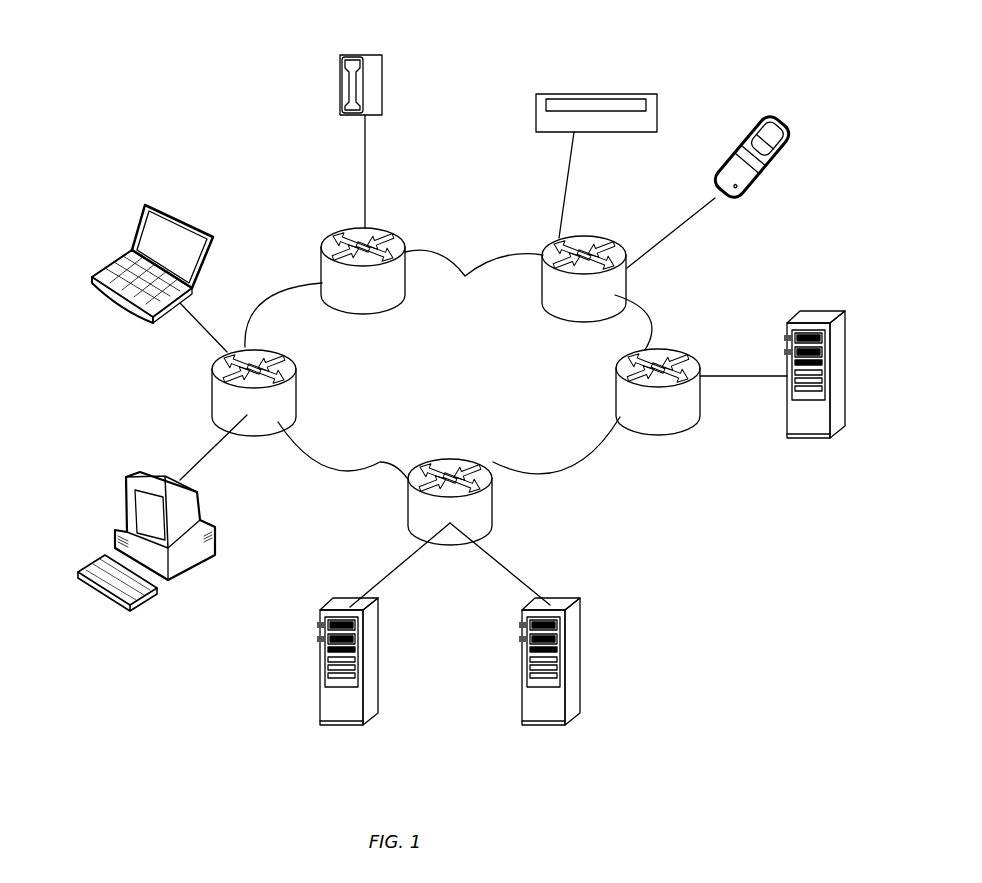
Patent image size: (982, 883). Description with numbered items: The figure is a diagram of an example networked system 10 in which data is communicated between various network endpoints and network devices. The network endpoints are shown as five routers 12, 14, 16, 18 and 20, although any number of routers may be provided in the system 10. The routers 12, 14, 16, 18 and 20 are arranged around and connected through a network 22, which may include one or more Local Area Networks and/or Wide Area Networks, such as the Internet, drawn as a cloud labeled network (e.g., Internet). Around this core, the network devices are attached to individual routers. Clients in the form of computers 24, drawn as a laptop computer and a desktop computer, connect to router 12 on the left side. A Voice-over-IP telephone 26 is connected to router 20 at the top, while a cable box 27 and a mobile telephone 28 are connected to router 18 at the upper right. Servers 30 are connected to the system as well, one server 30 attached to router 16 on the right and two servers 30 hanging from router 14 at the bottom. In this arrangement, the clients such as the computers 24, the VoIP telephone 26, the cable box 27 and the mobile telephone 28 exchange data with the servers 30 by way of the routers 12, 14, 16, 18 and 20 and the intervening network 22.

The system 10 is at (145, 52).
The router 12 is at (221, 374).
The router 14 is at (465, 502).
The router 16 is at (691, 401).
The router 18 is at (593, 271).
The router 20 is at (365, 257).
The network 22 is at (464, 387).
The computers 24 is at (122, 397).
The Voice-over-IP (VoIP) telephone 26 is at (394, 68).
The cable box 27 is at (596, 96).
The mobile telephone 28 is at (735, 180).
The servers 30 is at (550, 523).